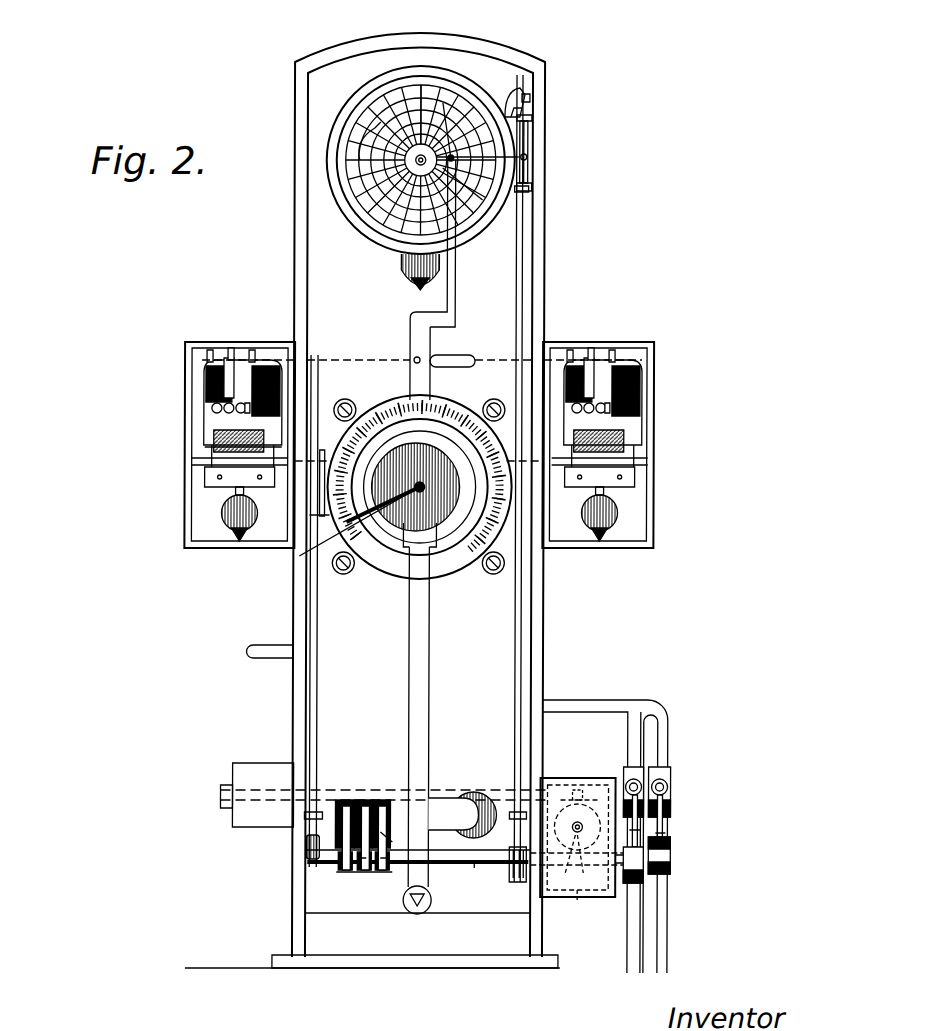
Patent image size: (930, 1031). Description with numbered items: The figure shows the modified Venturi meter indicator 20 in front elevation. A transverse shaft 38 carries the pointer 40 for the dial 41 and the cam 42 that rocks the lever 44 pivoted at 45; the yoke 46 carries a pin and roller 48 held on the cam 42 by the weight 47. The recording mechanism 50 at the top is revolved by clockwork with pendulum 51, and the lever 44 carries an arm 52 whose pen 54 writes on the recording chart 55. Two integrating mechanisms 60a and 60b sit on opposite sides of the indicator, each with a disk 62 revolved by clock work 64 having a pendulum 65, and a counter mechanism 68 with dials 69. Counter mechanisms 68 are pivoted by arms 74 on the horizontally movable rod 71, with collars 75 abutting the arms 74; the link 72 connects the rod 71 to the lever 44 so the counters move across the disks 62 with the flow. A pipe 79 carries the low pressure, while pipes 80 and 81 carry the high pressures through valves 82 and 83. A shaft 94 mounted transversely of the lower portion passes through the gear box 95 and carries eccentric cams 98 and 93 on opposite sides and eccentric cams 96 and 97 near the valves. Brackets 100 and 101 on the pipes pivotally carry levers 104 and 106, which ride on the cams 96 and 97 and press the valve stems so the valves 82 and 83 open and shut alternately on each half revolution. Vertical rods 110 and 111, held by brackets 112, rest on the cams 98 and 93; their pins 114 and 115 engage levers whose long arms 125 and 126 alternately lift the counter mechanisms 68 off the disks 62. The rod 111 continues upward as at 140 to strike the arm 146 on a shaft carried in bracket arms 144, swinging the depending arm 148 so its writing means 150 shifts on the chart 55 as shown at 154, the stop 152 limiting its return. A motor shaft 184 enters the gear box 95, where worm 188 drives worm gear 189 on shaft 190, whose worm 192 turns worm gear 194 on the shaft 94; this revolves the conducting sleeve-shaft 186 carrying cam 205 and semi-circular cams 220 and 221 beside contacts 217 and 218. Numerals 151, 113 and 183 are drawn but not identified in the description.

The Venturi meter indicator 20 is at (287, 253).
The changed position of writing means on chart 154 is at (432, 70).
The recording mechanism 50 is at (462, 92).
The pendulum 51 is at (403, 268).
The upwardly extending arm 52 is at (455, 258).
The bracket arms 144 is at (522, 90).
The stop 152 is at (527, 98).
The arm 146 is at (522, 107).
The depending arm 148 is at (529, 122).
The upper end of vertical rod 140 is at (525, 142).
The writing means 150 is at (524, 158).
The recording chart 55 is at (524, 176).
The brackets 112 is at (527, 190).
The pen 54 is at (480, 200).
The integrating mechanism 60a is at (191, 343).
The integrating mechanism 60b is at (650, 345).
The disks 62 is at (205, 400).
The armature 151 is at (223, 365).
The arms 74 is at (254, 352).
The collars 75 is at (229, 350).
The counter mechanisms 68 is at (210, 409).
The dials 69 is at (243, 413).
The long arm of lever 125 is at (203, 447).
The clock work 64 is at (205, 478).
The long arm of lever 126 is at (235, 471).
The pendulums 65 is at (235, 520).
The link 72 is at (445, 355).
The horizontally movable rod 71 is at (480, 358).
The shaft 38 is at (437, 535).
The cam 42 is at (406, 535).
The dial 41 is at (318, 545).
The pin and roller 48 is at (377, 413).
The pin 115 is at (493, 405).
The pointer 40 is at (363, 565).
The yoke 46 is at (470, 565).
The pin 114 is at (318, 450).
The vertical rod 110 is at (313, 677).
The vertical rod 111 is at (522, 623).
The lever 44 is at (430, 678).
The pipe 79 is at (262, 656).
The pivot 45 is at (417, 912).
The block 183 is at (258, 768).
The motor shaft 184 is at (356, 800).
The contact 217 is at (372, 800).
The contact 218 is at (395, 790).
The eccentric cam 98 is at (325, 870).
The semi-circular cam 220 is at (363, 870).
The conducting sleeve-shaft 186 is at (388, 862).
The cam 205 is at (362, 880).
The semi-circular cam 221 is at (392, 842).
The weight 47 is at (467, 792).
The collar 113 is at (512, 812).
The eccentric cam 93 is at (512, 876).
The shaft 94 is at (478, 866).
The gear box 95 is at (546, 778).
The worm 188 is at (575, 788).
The worm gear 189 is at (577, 827).
The shaft 190 is at (595, 860).
The worm 192 is at (565, 860).
The worm gear 194 is at (578, 890).
The pipe 80 is at (633, 745).
The pipe 81 is at (662, 747).
The valve 82 is at (627, 780).
The valve 83 is at (664, 783).
The bracket 101 is at (662, 800).
The bracket 100 is at (637, 822).
The lever 106 is at (640, 832).
The lever 104 is at (657, 834).
The eccentric cam 97 is at (643, 863).
The eccentric cam 96 is at (643, 887).